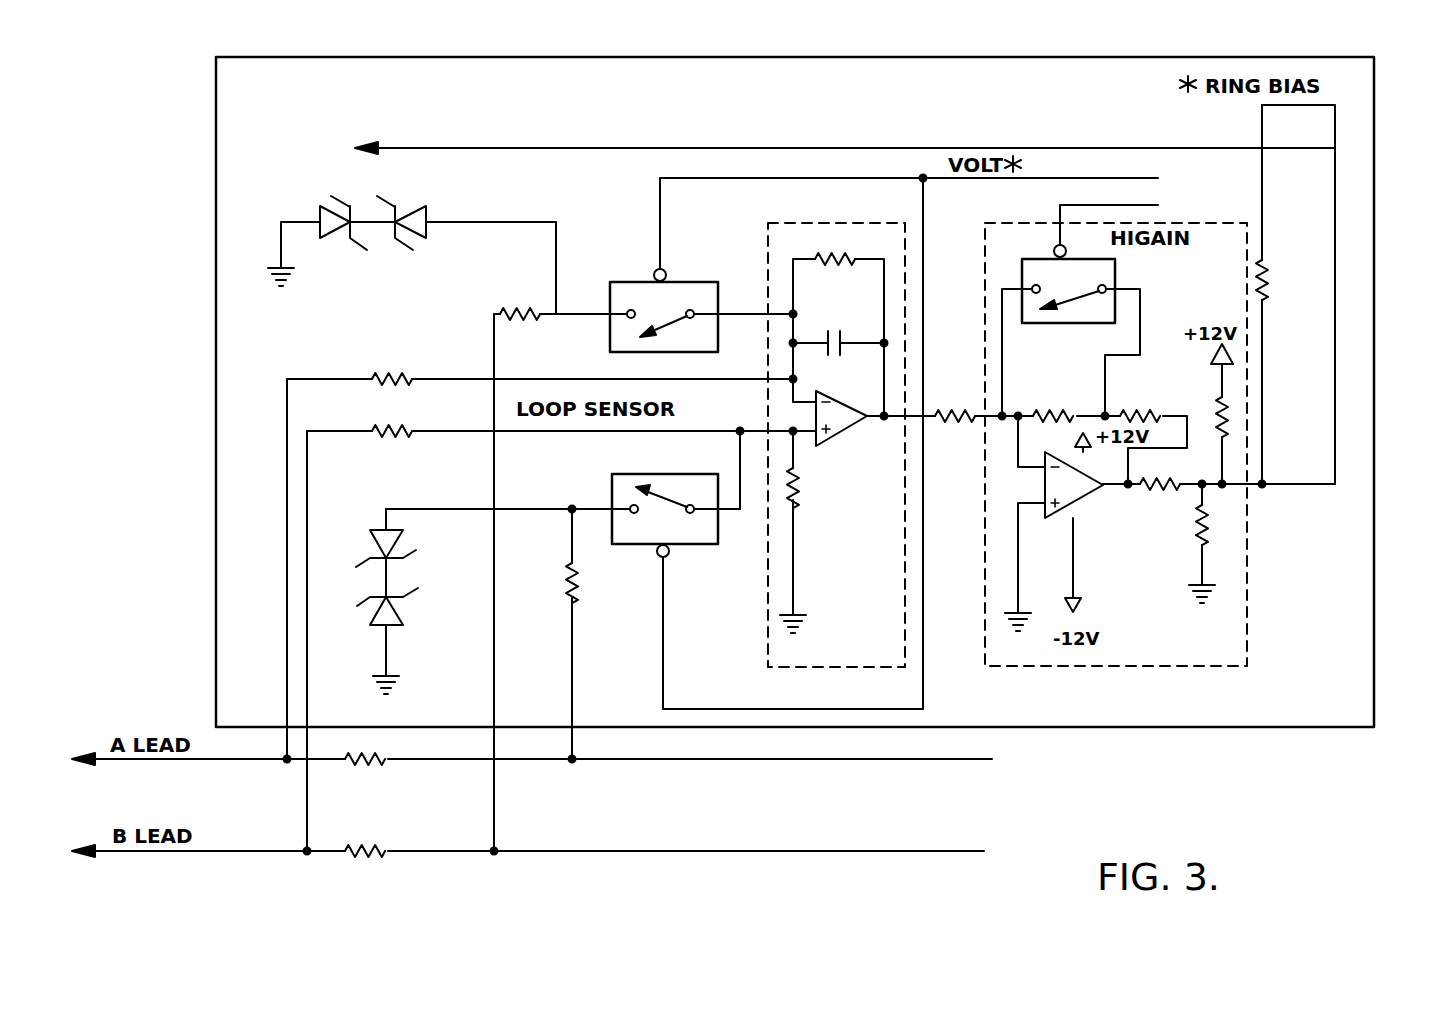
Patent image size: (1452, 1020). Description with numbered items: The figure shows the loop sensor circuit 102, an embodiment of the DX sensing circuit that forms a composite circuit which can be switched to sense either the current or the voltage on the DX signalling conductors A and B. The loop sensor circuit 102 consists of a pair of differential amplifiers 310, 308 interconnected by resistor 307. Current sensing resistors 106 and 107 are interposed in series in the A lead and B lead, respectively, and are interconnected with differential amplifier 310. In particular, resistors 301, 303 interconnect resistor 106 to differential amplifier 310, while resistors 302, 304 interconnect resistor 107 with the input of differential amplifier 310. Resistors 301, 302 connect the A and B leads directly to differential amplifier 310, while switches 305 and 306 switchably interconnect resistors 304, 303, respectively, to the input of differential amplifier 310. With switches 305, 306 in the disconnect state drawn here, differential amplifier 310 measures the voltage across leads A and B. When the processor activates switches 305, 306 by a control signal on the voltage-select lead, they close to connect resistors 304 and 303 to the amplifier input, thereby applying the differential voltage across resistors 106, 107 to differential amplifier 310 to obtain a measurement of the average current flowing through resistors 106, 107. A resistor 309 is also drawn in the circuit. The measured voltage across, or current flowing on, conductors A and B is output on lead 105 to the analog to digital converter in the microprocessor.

The loop sensor circuit 102 is at (1377, 268).
The lead 105 is at (508, 148).
The current sensing resistor 106 is at (370, 764).
The current sensing resistor 107 is at (378, 848).
The resistor 301 is at (380, 378).
The resistor 302 is at (379, 430).
The resistor 303 is at (578, 602).
The resistor 304 is at (540, 318).
The switch 305 is at (690, 280).
The switch 306 is at (606, 485).
The resistor 307 is at (958, 420).
The differential amplifier 308 is at (1166, 222).
The resistor 309 is at (1327, 248).
The differential amplifier 310 is at (824, 223).